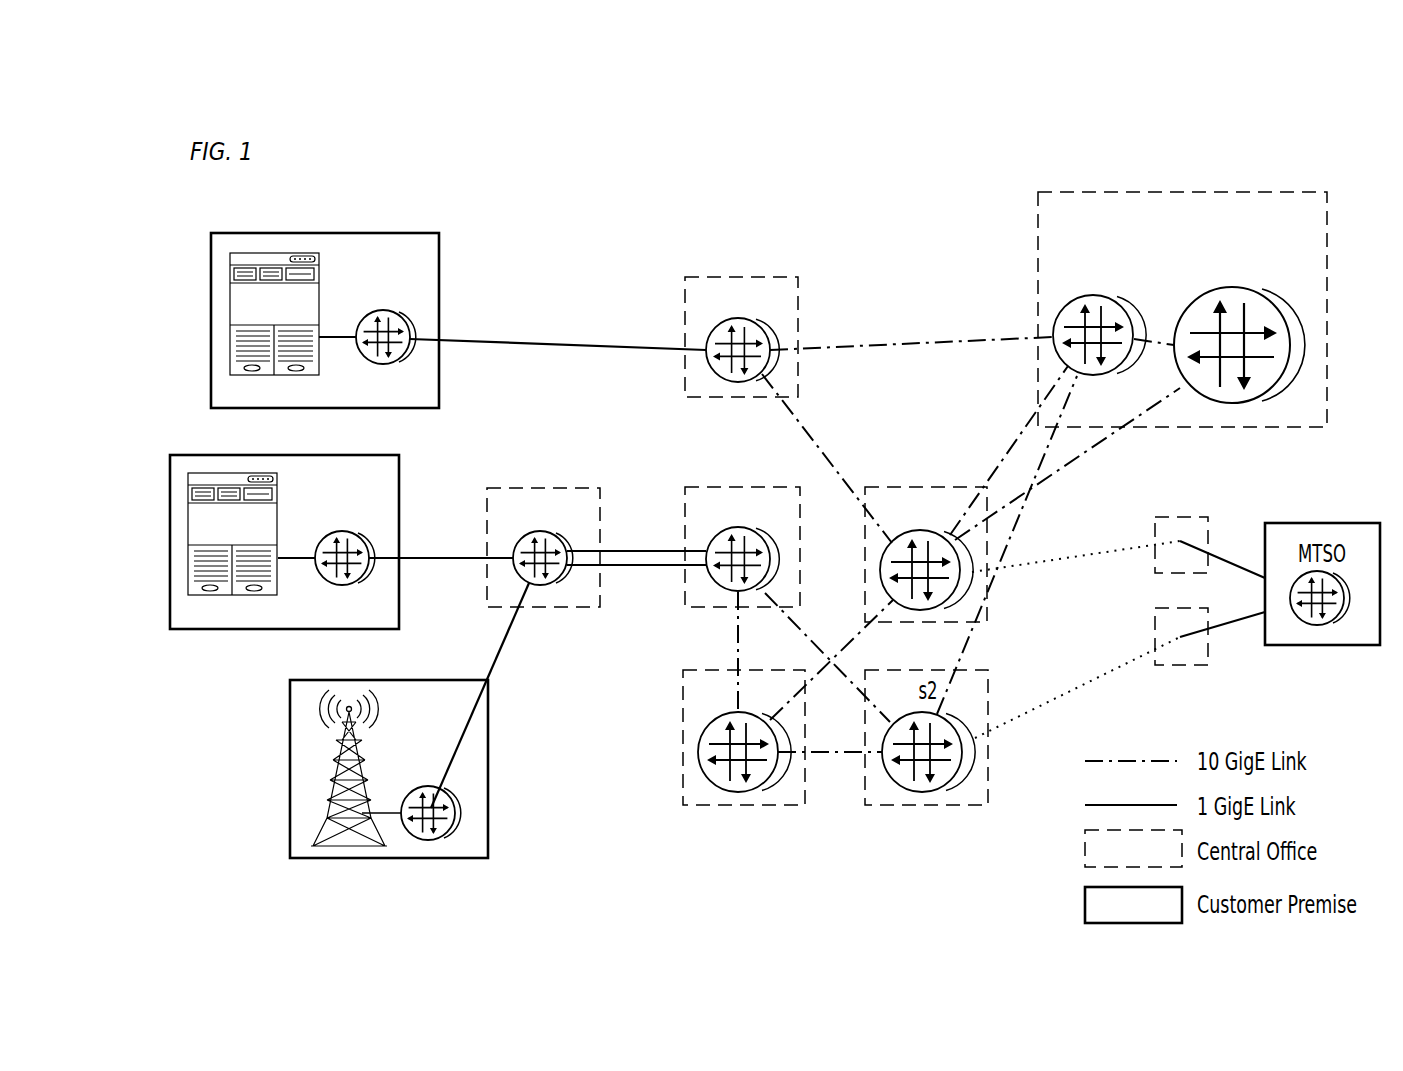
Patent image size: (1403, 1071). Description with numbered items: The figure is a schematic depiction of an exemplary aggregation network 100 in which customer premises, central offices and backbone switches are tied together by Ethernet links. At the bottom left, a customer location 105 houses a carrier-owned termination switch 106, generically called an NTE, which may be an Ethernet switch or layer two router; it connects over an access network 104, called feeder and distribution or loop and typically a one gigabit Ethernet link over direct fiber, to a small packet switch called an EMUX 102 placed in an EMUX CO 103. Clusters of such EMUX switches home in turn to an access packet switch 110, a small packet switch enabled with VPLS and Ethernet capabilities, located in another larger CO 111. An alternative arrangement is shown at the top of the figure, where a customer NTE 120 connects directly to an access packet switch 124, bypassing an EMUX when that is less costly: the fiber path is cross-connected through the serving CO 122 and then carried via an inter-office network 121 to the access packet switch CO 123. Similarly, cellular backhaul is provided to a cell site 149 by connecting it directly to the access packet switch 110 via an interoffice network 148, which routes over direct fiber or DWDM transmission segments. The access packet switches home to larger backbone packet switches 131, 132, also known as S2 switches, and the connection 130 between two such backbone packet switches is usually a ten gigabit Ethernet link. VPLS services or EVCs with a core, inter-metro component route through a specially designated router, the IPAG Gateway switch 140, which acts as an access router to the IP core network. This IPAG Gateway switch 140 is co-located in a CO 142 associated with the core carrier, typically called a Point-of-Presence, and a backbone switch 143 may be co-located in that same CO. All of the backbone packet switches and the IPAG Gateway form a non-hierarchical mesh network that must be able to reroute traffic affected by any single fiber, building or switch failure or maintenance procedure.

The network 100 is at (620, 222).
The EMUX switch 102 is at (548, 584).
The EMUX CO 103 is at (543, 547).
The access network link 104 is at (445, 558).
The customer location 105 is at (276, 526).
The NTE termination switch 106 is at (331, 584).
The access packet switch 110 is at (712, 536).
The CO 111 is at (722, 521).
The customer NTE 120 is at (410, 322).
The inter-office network 121 is at (572, 342).
The serving CO 122 is at (359, 291).
The access packet switch CO 123 is at (722, 311).
The access packet switch 124 is at (718, 326).
The connection 130 is at (857, 632).
The backbone packet switch 131 is at (907, 532).
The backbone packet switch 132 is at (736, 793).
The IPAG Gateway switch 140 is at (1291, 330).
The CO (Point-of-Presence) 142 is at (1187, 282).
The backbone switch 143 is at (1057, 318).
The interoffice network 148 is at (497, 651).
The cell site 149 is at (290, 757).